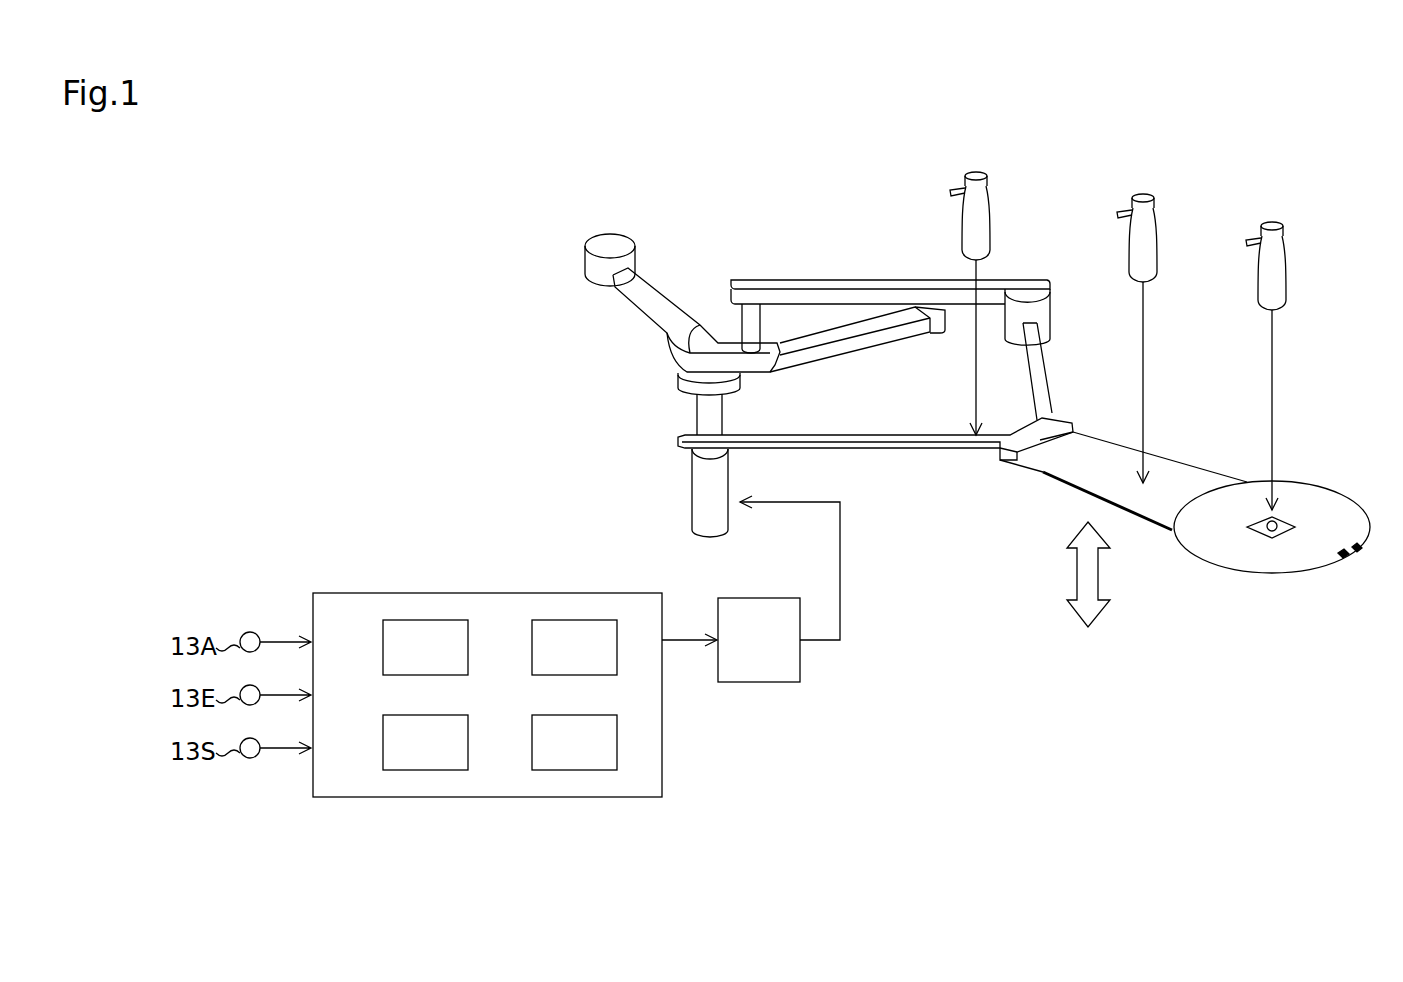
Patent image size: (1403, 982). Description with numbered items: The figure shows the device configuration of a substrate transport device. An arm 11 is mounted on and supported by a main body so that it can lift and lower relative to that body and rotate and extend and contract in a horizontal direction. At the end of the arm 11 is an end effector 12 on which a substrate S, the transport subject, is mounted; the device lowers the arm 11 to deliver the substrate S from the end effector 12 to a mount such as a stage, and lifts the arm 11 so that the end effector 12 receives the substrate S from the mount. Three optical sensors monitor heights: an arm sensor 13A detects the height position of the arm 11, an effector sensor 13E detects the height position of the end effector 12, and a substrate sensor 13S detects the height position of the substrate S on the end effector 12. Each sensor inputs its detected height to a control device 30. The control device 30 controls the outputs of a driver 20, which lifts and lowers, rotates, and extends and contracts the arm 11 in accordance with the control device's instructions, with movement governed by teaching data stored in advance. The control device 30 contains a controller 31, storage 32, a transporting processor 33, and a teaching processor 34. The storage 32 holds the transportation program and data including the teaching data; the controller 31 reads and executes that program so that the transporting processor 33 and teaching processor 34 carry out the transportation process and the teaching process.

The arm 11 is at (886, 280).
The end effector 12 is at (1272, 576).
The arm sensor 13A is at (990, 192).
The effector sensor 13E is at (1159, 210).
The substrate sensor 13S is at (1287, 239).
The driver 20 is at (767, 597).
The control device 30 is at (512, 591).
The controller 31 is at (382, 650).
The storage 32 is at (382, 745).
The transporting processor 33 is at (531, 650).
The teaching processor 34 is at (531, 745).
The substrate S is at (1332, 496).